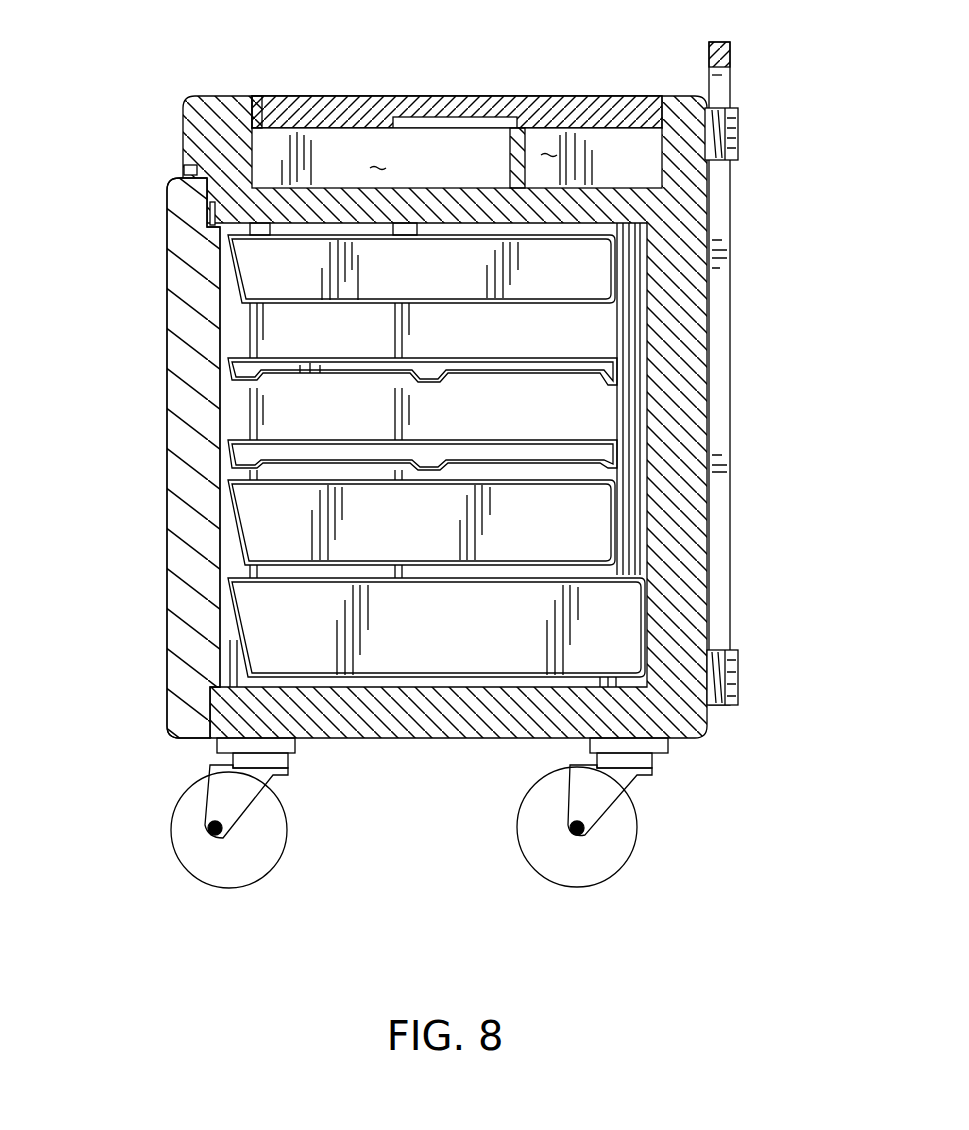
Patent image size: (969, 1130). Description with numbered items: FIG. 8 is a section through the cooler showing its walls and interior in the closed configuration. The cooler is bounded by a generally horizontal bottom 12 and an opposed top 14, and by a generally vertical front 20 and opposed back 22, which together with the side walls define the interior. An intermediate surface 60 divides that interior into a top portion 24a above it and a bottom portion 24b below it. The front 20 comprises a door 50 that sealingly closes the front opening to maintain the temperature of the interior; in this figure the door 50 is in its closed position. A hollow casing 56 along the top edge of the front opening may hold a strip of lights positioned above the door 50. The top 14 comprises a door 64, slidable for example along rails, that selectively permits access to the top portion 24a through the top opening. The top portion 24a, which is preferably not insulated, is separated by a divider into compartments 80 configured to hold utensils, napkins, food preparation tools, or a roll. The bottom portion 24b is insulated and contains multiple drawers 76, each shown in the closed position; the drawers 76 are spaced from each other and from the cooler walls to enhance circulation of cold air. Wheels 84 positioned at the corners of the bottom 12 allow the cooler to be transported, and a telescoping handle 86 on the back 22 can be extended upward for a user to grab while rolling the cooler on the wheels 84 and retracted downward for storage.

The bottom 12 is at (418, 740).
The top 14 is at (214, 96).
The front 20 is at (166, 528).
The back 22 is at (708, 718).
The top portion 24a is at (333, 158).
The bottom portion 24b is at (495, 333).
The door 50 is at (167, 465).
The hollow casing 56 is at (185, 172).
The intermediate surface 60 is at (266, 186).
The door 64 is at (375, 96).
The drawer 76 is at (235, 285).
The compartments 80 is at (377, 166).
The wheels 84 is at (262, 853).
The handle 86 is at (732, 80).